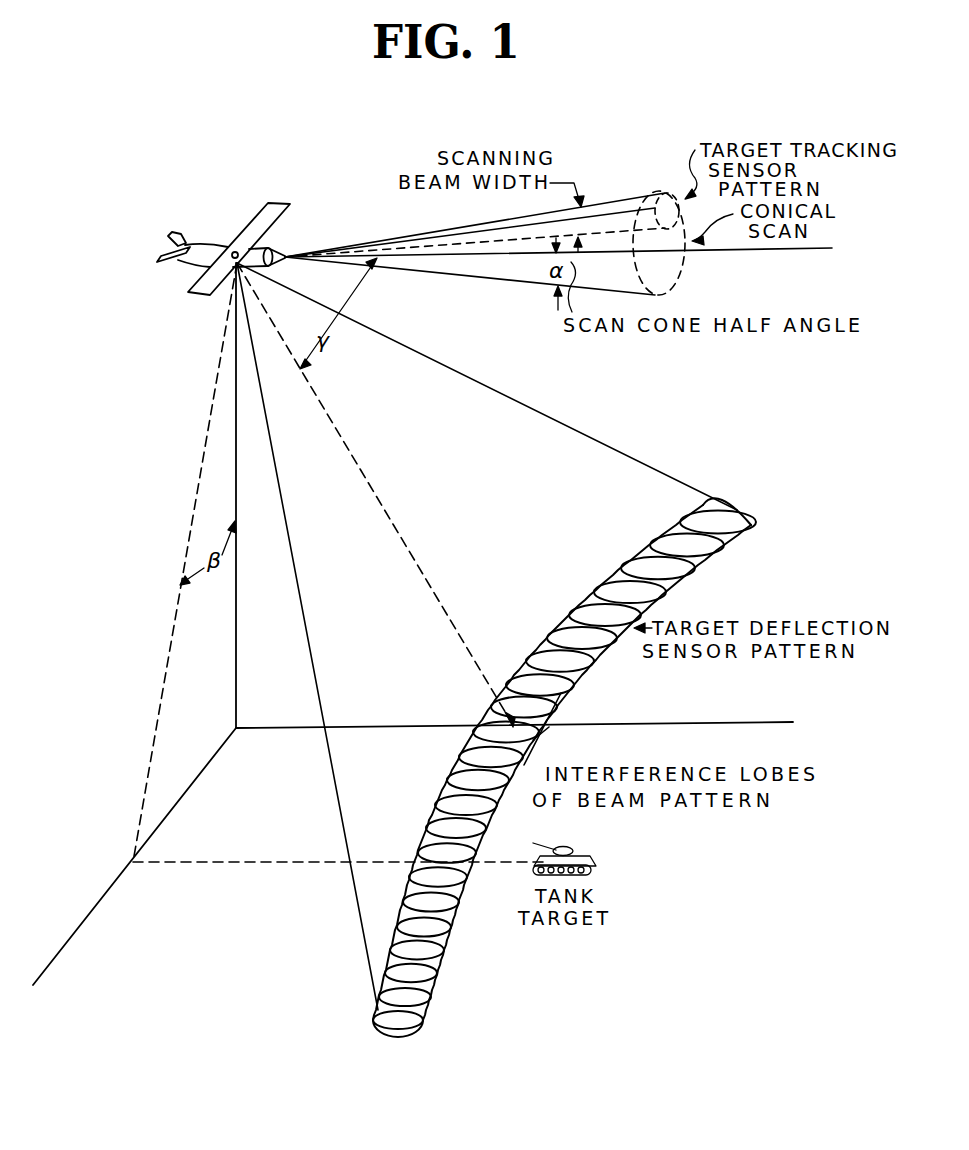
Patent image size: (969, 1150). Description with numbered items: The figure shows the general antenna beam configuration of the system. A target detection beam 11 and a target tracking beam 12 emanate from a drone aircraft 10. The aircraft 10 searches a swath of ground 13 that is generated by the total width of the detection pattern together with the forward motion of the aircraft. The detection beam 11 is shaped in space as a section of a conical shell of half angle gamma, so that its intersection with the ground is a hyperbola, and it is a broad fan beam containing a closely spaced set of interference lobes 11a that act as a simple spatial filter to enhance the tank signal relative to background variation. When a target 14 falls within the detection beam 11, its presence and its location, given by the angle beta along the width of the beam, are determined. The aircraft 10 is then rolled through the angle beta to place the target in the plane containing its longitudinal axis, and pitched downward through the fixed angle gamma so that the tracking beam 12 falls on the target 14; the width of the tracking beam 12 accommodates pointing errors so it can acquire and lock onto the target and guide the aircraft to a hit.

The drone aircraft 10 is at (273, 212).
The target detection beam 11 is at (742, 543).
The interference lobes 11a is at (537, 738).
The target tracking beam 12 is at (620, 195).
The swath of ground 13 is at (263, 966).
The target 14 is at (593, 862).